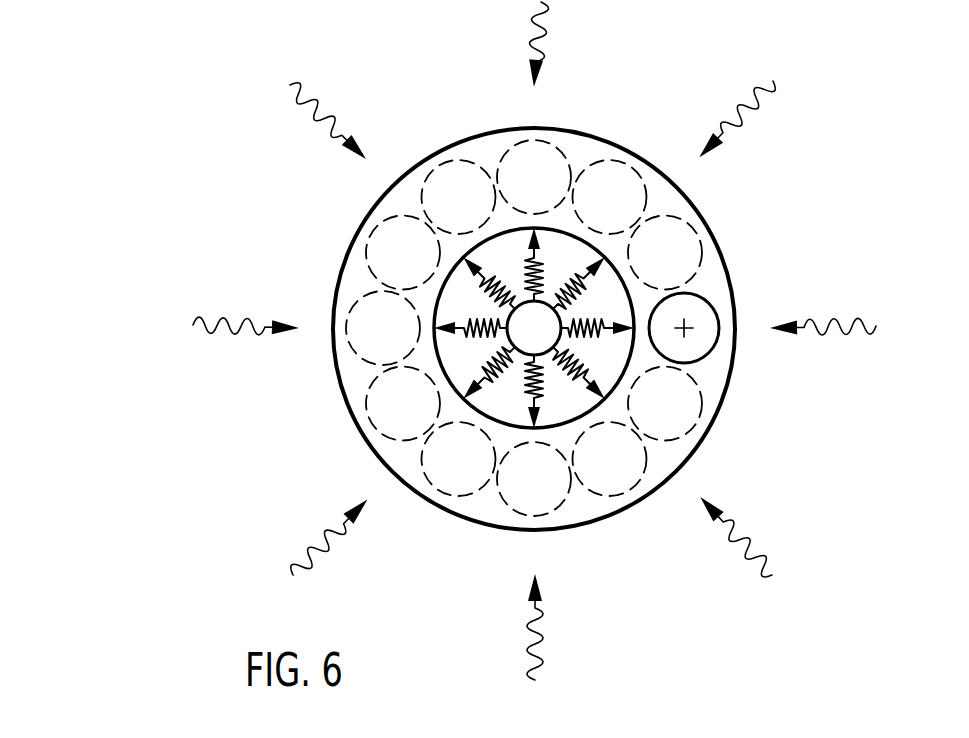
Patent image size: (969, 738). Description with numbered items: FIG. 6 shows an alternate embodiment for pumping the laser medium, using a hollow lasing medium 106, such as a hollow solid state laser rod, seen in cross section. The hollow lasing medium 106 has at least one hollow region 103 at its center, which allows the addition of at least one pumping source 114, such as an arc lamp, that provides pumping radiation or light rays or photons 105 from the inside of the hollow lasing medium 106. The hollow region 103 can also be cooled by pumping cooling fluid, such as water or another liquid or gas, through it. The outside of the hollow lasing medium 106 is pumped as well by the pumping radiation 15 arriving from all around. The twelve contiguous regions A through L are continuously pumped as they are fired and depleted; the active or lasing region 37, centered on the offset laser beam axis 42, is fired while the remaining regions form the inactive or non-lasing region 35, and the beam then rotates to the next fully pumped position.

The pumping radiation 15 is at (538, 14).
The inactive or non-lasing region 35 is at (365, 280).
The active or lasing region 37 is at (689, 362).
The offset laser beam centerline or axis 42 is at (686, 329).
The hollow region 103 is at (432, 350).
The pumping radiation or light rays or photons 105 is at (565, 292).
The hollow lasing medium 106 is at (690, 452).
The pumping source 114 is at (574, 316).